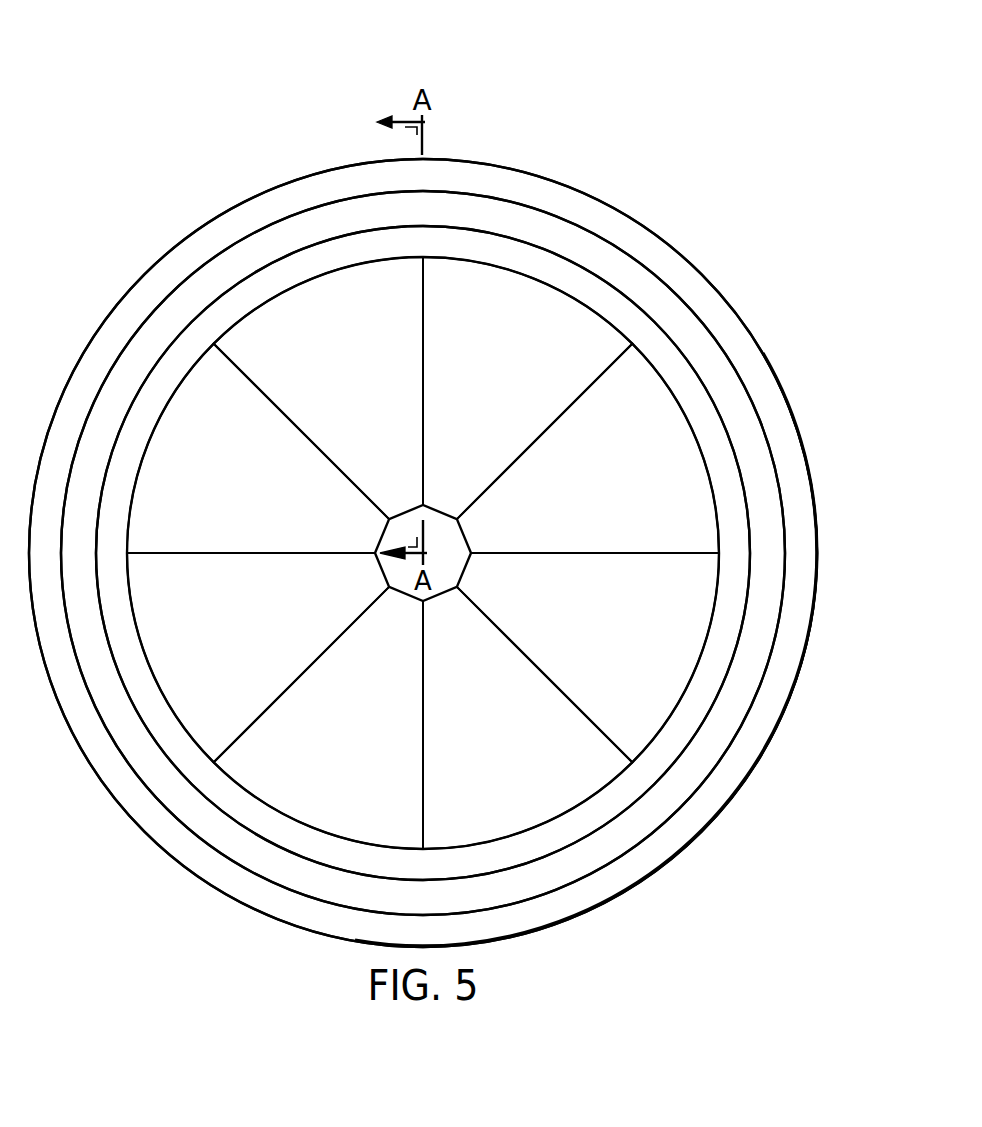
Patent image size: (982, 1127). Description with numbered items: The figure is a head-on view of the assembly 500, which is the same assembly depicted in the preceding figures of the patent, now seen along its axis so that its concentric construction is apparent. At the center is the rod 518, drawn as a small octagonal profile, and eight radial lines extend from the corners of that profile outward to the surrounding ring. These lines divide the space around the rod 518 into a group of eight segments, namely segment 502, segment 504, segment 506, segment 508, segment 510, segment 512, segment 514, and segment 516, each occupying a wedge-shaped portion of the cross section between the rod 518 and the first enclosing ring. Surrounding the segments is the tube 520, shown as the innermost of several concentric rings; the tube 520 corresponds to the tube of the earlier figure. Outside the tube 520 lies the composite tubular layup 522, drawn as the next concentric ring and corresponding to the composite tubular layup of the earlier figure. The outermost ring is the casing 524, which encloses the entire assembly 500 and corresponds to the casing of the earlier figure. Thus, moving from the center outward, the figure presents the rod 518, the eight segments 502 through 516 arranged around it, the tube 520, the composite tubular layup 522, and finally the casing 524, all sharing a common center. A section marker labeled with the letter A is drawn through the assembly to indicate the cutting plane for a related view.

The assembly 500 is at (183, 64).
The segment 502 is at (383, 423).
The segment 504 is at (505, 423).
The segment 506 is at (588, 448).
The segment 508 is at (550, 631).
The segment 510 is at (505, 717).
The segment 512 is at (383, 717).
The segment 514 is at (253, 631).
The segment 516 is at (253, 508).
The rod 518 is at (455, 538).
The tube 520 is at (267, 273).
The composite tubular layup 522 is at (357, 203).
The casing 524 is at (500, 177).